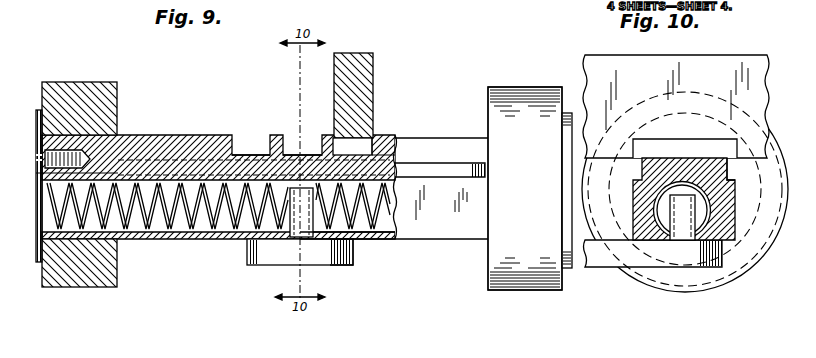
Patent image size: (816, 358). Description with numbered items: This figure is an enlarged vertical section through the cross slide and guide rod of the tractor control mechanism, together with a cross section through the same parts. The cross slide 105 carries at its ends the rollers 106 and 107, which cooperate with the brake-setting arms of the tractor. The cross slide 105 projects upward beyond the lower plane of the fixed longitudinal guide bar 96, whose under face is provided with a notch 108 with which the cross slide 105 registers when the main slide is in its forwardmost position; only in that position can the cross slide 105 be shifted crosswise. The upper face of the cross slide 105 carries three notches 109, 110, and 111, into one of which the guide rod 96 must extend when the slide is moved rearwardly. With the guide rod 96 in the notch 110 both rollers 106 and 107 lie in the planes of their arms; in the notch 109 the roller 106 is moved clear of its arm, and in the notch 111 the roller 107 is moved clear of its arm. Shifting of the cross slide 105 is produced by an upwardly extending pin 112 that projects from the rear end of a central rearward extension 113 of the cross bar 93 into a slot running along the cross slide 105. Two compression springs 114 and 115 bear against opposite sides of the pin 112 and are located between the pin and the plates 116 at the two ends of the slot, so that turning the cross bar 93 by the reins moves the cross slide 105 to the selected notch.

In FIG. 9, the cross bar 93 is at (350, 266).
In FIG. 9, the guide bar 96 is at (367, 83).
In FIG. 10, the guide bar 96 is at (747, 64).
In FIG. 9, the cross slide 105 is at (189, 142).
In FIG. 10, the cross slide 105 is at (733, 243).
In FIG. 9, the roller 106 is at (102, 272).
In FIG. 9, the roller 107 is at (541, 288).
In FIG. 10, the roller 107 is at (710, 278).
In FIG. 9, the notch 108 is at (363, 137).
In FIG. 10, the notch 108 is at (678, 138).
In FIG. 9, the notch 109 is at (251, 148).
In FIG. 9, the notch 110 is at (309, 146).
In FIG. 10, the notch 110 is at (738, 160).
In FIG. 9, the notch 111 is at (375, 146).
In FIG. 9, the pin 112 is at (292, 230).
In FIG. 10, the pin 112 is at (683, 226).
In FIG. 9, the central rearward extension 113 is at (280, 257).
In FIG. 10, the central rearward extension 113 is at (615, 258).
In FIG. 9, the compression spring 114 is at (181, 239).
In FIG. 9, the compression spring 115 is at (385, 239).
In FIG. 10, the compression spring 115 is at (658, 207).
In FIG. 9, the plates 116 is at (37, 263).